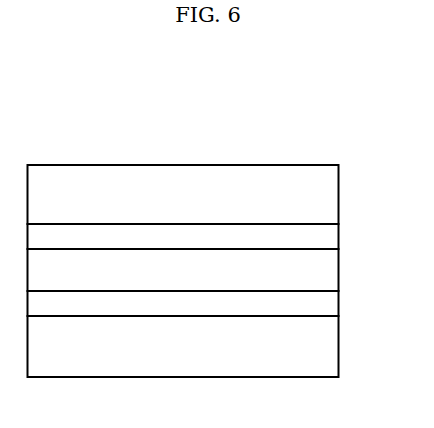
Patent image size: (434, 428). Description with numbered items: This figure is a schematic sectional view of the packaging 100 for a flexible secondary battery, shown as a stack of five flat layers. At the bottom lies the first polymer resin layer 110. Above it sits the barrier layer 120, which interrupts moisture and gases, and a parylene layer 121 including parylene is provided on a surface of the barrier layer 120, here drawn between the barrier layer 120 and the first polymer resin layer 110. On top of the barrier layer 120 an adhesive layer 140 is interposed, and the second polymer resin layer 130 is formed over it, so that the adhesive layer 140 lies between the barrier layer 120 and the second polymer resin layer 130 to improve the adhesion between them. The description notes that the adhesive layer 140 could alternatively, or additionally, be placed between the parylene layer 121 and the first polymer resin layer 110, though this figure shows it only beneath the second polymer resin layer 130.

The packaging 100 is at (98, 83).
The first polymer resin layer 110 is at (342, 345).
The barrier layer 120 is at (342, 272).
The parylene layer 121 is at (342, 305).
The second polymer resin layer 130 is at (342, 195).
The adhesive layer 140 is at (342, 238).